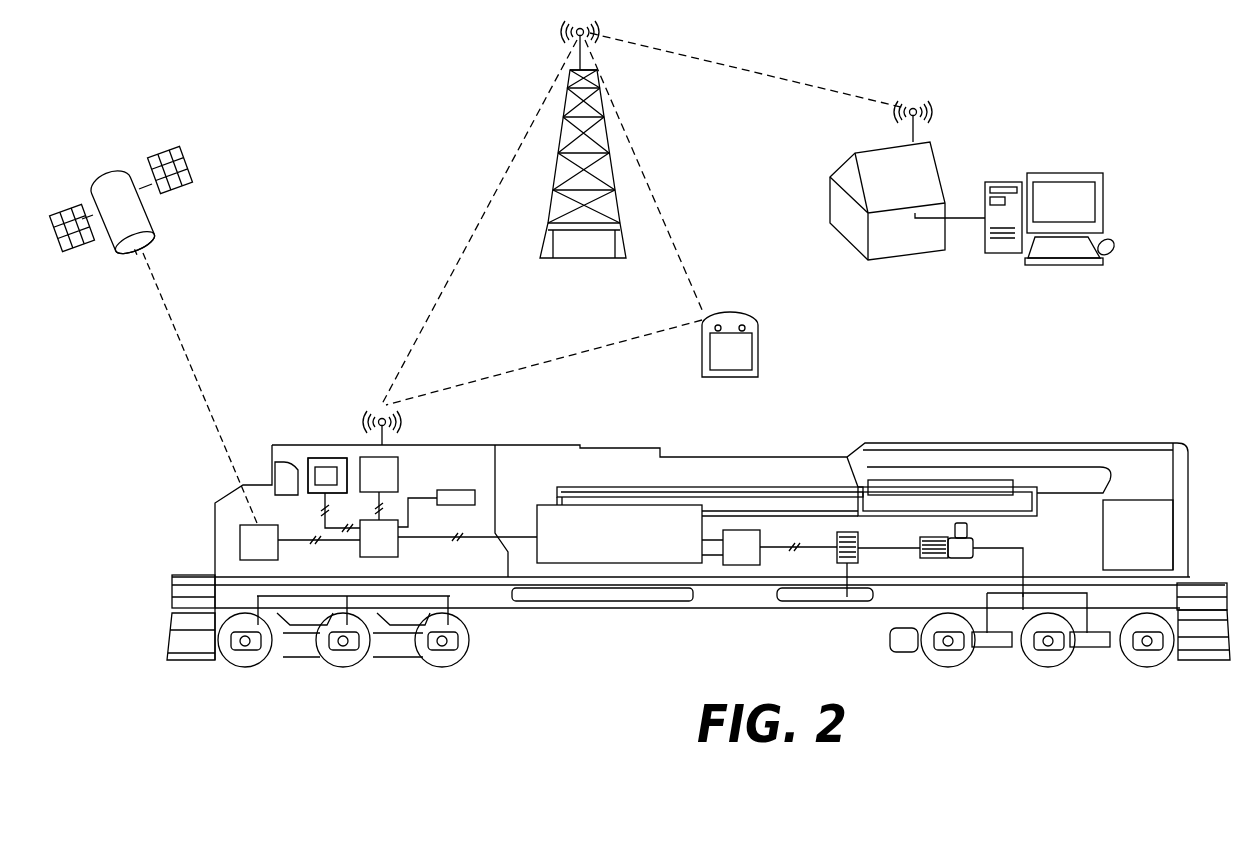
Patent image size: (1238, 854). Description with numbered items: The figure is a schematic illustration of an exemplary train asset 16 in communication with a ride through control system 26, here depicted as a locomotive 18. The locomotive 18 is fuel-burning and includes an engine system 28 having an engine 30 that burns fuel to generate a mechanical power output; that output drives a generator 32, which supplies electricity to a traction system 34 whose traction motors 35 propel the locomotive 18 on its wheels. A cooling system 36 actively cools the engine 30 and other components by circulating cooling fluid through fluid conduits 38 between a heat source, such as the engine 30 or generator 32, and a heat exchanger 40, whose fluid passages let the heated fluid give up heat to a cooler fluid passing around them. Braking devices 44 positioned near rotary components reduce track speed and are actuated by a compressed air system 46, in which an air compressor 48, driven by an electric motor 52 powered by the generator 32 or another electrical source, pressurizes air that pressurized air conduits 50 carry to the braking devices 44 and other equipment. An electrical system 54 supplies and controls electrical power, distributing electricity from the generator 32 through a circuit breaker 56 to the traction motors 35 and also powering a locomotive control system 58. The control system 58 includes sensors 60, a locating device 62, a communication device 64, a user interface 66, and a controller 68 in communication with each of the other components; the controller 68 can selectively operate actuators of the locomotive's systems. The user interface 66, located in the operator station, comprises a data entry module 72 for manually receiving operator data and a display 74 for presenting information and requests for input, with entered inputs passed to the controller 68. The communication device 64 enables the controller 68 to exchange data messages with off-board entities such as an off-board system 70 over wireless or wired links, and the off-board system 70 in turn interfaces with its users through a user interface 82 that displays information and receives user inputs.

The train asset 16 is at (136, 540).
The locomotive 18 is at (213, 545).
The ride through control system 26 is at (358, 117).
The engine system 28 is at (541, 490).
The engine 30 is at (609, 545).
The generator 32 is at (732, 557).
The traction system 34 is at (208, 728).
The traction motors 35 is at (428, 703).
The cooling system 36 is at (982, 430).
The fluid conduits 38 is at (728, 487).
The heat exchanger 40 is at (917, 481).
The braking devices 44 is at (990, 640).
The compressed air system 46 is at (1058, 534).
The air compressor 48 is at (945, 558).
The pressurized air conduits 50 is at (1024, 560).
The electric motor 52 is at (952, 522).
The electrical system 54 is at (829, 533).
The circuit breaker 56 is at (838, 565).
The locomotive control system 58 is at (256, 442).
The sensors 60 is at (450, 490).
The locating device 62 is at (250, 552).
The communication device 64 is at (370, 484).
The user interface 66 is at (277, 382).
The controller 68 is at (370, 549).
The off-board system 70 is at (988, 125).
The data entry module 72 is at (313, 457).
The display 74 is at (332, 467).
The user interface 82 is at (765, 354).